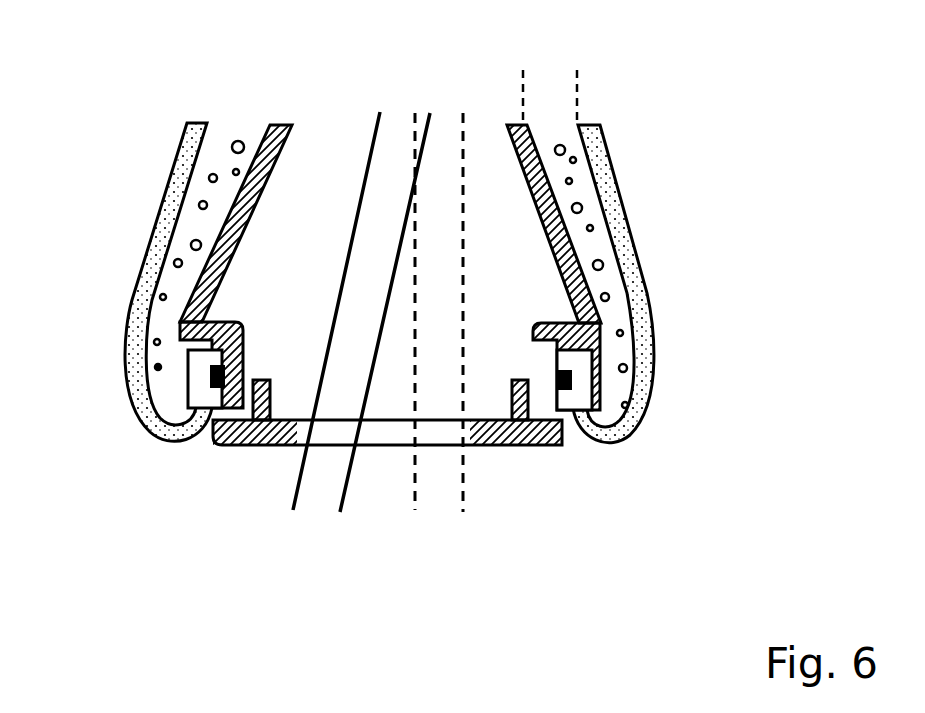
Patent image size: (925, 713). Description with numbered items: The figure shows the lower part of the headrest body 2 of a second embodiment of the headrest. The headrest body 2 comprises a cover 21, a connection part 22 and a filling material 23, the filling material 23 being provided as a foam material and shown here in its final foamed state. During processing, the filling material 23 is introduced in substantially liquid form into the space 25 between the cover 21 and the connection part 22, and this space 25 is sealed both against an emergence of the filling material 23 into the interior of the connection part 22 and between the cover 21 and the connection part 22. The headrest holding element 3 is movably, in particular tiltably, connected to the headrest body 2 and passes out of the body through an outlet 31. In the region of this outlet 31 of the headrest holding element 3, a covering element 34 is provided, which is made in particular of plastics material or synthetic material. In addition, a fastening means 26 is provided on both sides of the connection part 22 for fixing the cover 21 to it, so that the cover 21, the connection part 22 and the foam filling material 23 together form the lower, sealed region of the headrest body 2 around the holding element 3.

The headrest body 2 is at (410, 281).
The cover 21 is at (637, 297).
The connection part 22 is at (237, 228).
The filling material 23 is at (583, 188).
The space 25 is at (577, 72).
The fastening means 26 is at (212, 390).
The headrest holding element 3 is at (322, 487).
The outlet 31 is at (376, 462).
The covering element 34 is at (503, 458).